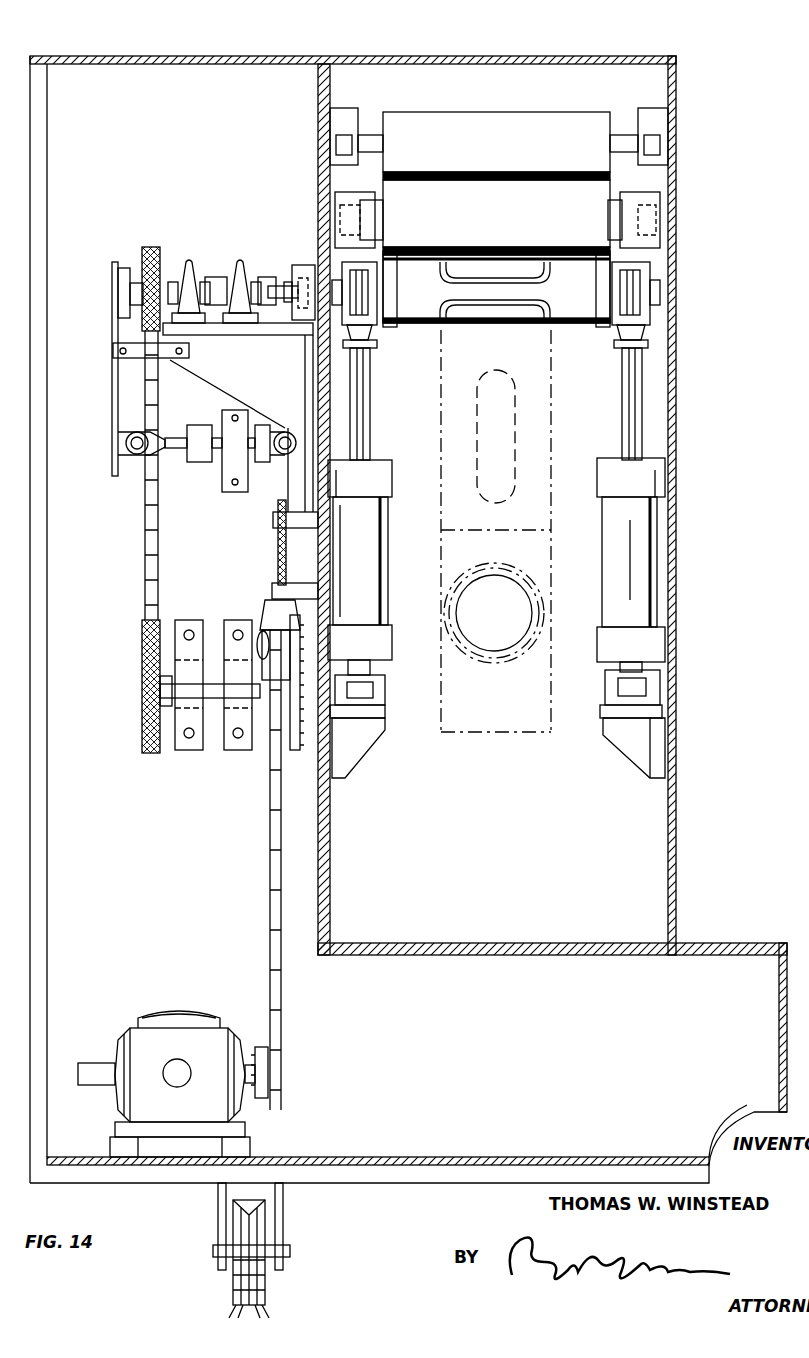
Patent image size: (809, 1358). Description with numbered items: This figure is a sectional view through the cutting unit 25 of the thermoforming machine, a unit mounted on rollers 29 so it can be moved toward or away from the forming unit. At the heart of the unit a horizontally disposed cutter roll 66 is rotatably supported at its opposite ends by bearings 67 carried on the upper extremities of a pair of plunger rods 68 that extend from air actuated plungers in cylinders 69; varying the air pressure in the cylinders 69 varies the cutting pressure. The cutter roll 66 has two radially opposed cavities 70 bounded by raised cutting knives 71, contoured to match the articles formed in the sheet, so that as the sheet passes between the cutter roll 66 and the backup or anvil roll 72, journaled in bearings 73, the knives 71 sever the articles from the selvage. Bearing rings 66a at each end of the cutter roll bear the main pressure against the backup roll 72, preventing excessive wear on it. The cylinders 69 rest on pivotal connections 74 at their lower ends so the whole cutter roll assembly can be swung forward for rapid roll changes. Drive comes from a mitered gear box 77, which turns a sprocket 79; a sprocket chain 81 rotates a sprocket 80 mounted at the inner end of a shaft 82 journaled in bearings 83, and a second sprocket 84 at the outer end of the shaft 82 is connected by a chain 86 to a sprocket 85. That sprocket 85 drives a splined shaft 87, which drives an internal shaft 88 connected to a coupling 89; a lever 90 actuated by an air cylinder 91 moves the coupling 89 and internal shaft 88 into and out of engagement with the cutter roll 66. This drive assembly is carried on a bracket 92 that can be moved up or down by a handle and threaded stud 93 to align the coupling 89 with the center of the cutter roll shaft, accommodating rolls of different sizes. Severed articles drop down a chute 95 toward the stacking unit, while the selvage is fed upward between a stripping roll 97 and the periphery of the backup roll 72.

The cutting unit 25 is at (510, 40).
The rollers 29 is at (262, 1286).
The cutter roll 66 is at (570, 325).
The bearing rings 66a is at (395, 327).
The bearings 67 is at (362, 320).
The plunger rods 68 is at (372, 405).
The cylinders 69 is at (380, 562).
The cavities 70 is at (516, 270).
The cutting knives 71 is at (540, 322).
The backup roll 72 is at (477, 219).
The bearings 73 is at (345, 203).
The pivotal connections 74 is at (375, 697).
The mitered gear box 77 is at (162, 1028).
The sprocket 79 is at (278, 1096).
The sprocket 80 is at (283, 745).
The sprocket chain 81 is at (268, 906).
The shaft 82 is at (143, 688).
The bearings 83 is at (228, 748).
The second sprocket 84 is at (143, 750).
The sprocket 85 is at (160, 250).
The chain 86 is at (145, 556).
The splined shaft 87 is at (218, 278).
The internal shaft 88 is at (272, 287).
The coupling 89 is at (302, 265).
The lever 90 is at (112, 410).
The air cylinder 91 is at (198, 430).
The bracket 92 is at (279, 366).
The handle and threaded stud 93 is at (278, 562).
The chute 95 is at (540, 462).
The stripping roll 97 is at (512, 147).